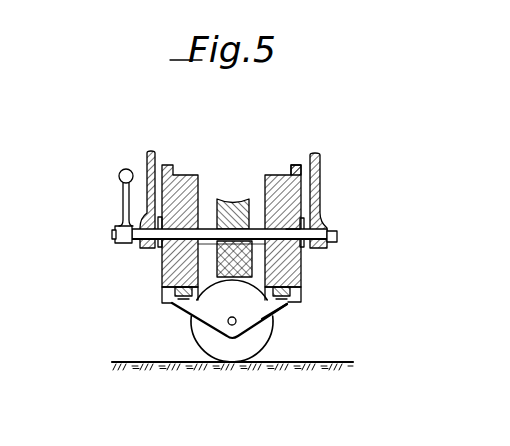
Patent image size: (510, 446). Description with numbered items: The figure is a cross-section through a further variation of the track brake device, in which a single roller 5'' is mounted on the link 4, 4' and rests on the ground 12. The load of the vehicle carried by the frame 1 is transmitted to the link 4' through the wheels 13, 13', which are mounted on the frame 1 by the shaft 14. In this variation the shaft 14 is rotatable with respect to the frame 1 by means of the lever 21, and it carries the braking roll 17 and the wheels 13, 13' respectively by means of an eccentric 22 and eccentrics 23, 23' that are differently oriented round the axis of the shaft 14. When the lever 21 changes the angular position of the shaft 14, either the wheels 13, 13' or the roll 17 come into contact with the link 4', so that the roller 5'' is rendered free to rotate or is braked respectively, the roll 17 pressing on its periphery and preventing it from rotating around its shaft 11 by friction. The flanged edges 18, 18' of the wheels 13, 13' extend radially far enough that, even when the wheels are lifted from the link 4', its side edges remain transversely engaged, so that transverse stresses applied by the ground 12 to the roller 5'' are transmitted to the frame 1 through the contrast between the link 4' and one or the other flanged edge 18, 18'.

The frame 1 is at (150, 160).
The lever 21 is at (121, 195).
The wheel 13 is at (180, 206).
The wheel 13' is at (329, 247).
The braking roll 17 is at (235, 202).
The flanged edge 18 is at (132, 314).
The flanged edge 18' is at (292, 204).
The eccentric 22 is at (238, 252).
The eccentric 23 is at (199, 256).
The eccentric 23' is at (339, 258).
The shaft 14 is at (326, 231).
The link 4 is at (217, 356).
The link 4' is at (323, 331).
The roller 5'' is at (256, 345).
The shaft 11 is at (230, 325).
The ground 12 is at (147, 360).